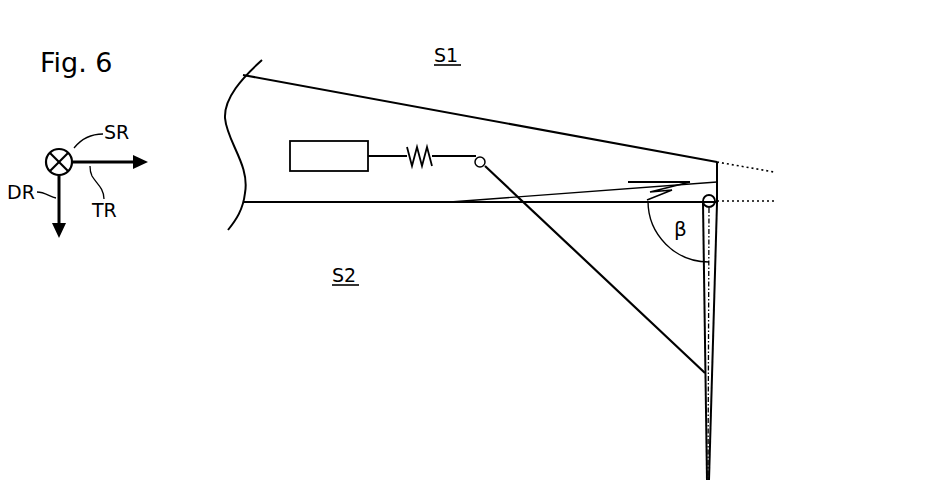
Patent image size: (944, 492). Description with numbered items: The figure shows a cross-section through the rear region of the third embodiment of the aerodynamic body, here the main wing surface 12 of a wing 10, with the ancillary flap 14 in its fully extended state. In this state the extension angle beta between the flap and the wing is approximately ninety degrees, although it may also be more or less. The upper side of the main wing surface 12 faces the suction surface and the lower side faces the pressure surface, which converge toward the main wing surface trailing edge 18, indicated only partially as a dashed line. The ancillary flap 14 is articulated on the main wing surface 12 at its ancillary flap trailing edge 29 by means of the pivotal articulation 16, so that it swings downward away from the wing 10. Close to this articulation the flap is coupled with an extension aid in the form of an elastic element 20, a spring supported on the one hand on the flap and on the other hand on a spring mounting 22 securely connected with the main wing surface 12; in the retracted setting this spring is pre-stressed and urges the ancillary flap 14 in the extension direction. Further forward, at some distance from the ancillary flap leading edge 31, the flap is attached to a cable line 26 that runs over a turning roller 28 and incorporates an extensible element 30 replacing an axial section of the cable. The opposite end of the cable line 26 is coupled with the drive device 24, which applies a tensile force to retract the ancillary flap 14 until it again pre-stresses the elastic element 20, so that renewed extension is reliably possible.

The wing 10 is at (520, 76).
The main wing surface 12 is at (645, 148).
The ancillary flap 14 is at (717, 310).
The pivotal articulation 16 is at (714, 210).
The main wing surface trailing edge 18 is at (737, 177).
The elastic element 20 is at (583, 192).
The spring mounting 22 is at (647, 182).
The drive device 24 is at (320, 141).
The cable line 26 is at (567, 242).
The turning roller 28 is at (485, 158).
The ancillary flap trailing edge 29 is at (716, 203).
The extensible element 30 is at (418, 166).
The ancillary flap leading edge 31 is at (704, 478).